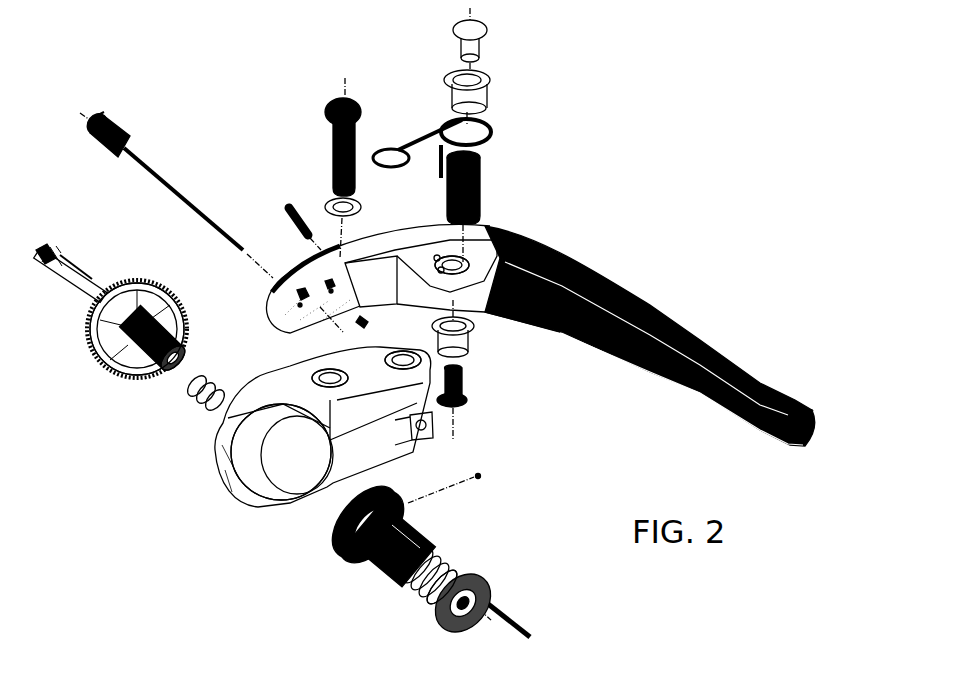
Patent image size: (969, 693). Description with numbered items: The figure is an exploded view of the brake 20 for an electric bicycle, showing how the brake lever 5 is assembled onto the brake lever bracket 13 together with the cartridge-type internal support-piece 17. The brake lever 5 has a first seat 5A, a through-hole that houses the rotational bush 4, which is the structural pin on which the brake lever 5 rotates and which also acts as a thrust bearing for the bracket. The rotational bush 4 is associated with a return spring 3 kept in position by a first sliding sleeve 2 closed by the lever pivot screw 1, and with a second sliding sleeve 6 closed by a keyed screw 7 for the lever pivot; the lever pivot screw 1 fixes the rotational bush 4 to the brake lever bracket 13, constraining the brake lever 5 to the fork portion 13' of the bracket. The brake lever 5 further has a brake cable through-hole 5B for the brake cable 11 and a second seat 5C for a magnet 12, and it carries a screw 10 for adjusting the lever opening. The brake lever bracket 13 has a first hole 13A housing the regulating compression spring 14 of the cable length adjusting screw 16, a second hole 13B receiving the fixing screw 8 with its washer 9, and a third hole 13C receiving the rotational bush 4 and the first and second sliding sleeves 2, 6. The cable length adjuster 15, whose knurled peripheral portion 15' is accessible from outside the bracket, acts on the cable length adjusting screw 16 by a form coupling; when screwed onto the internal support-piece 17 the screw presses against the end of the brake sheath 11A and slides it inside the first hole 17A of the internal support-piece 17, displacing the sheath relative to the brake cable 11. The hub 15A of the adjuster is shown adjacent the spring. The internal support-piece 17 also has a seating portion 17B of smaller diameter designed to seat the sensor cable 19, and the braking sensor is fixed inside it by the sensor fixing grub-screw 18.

The lever pivot screw 1 is at (470, 39).
The first sliding sleeve 2 is at (467, 97).
The return spring 3 is at (432, 148).
The rotational bush 4 is at (463, 207).
The brake lever 5 is at (540, 335).
The first seat 5A is at (468, 251).
The brake cable through-hole 5B is at (296, 296).
The second seat 5C is at (323, 281).
The second sliding sleeve 6 is at (453, 328).
The keyed screw 7 is at (452, 401).
The fixing screw 8 is at (343, 137).
The washer 9 is at (343, 228).
The screw for adjusting the lever opening 10 is at (290, 222).
The brake cable 11 is at (176, 194).
The brake sheath 11A is at (108, 114).
The magnet 12 is at (355, 322).
The brake lever bracket 13 is at (323, 427).
The first hole 13A is at (286, 474).
The second hole 13B is at (332, 386).
The third hole 13C is at (412, 366).
The fork portion 13' is at (465, 453).
The regulating compression spring 14 is at (206, 392).
The cable length adjuster 15 is at (138, 329).
The knurled peripheral portion 15' is at (129, 295).
The gear hub 15A is at (173, 378).
The cable length adjusting screw 16 is at (66, 268).
The internal support-piece 17 is at (378, 530).
The first hole 17A is at (468, 614).
The seating portion 17B is at (427, 598).
The sensor fixing grub-screw 18 is at (444, 489).
The sensor cable 19 is at (578, 592).
The brake 20 is at (646, 198).